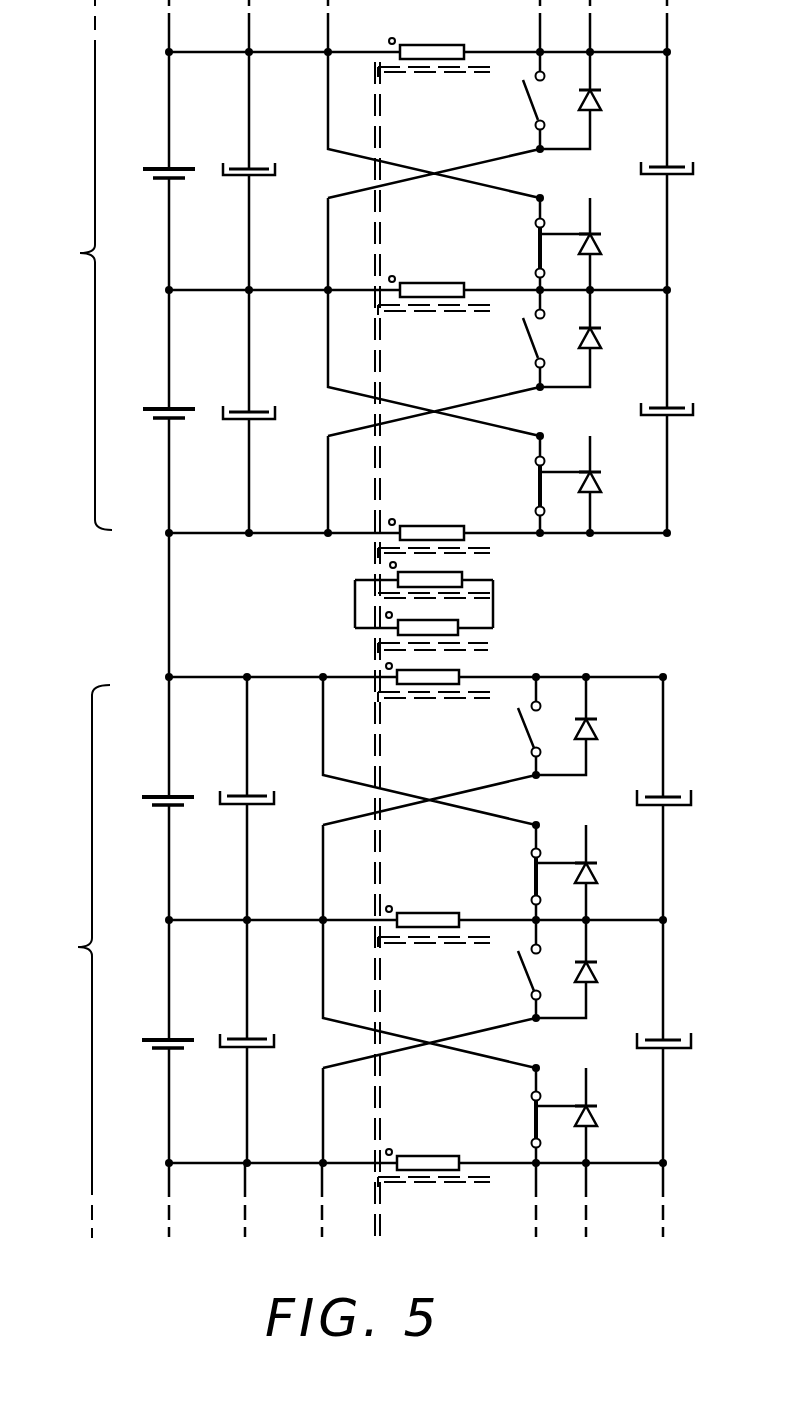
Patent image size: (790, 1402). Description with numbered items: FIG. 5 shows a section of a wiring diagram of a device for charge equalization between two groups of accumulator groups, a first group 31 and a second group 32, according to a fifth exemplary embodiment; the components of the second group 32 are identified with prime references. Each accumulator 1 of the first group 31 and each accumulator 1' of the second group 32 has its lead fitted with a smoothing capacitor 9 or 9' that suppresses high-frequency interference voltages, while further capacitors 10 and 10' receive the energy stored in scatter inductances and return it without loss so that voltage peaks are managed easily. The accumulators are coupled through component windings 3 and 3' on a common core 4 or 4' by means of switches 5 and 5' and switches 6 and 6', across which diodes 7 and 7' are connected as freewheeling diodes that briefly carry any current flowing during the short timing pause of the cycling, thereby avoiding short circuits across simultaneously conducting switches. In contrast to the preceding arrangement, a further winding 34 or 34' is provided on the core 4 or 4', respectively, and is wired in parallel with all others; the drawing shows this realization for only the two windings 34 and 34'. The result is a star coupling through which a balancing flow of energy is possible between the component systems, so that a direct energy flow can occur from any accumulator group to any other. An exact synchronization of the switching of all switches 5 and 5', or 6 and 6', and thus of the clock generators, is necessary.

The accumulator 1 is at (152, 282).
The accumulator 1' is at (152, 920).
The component winding 3 is at (430, 289).
The component winding 3' is at (422, 916).
The core 4 is at (432, 651).
The core 4' is at (434, 939).
The switch 5 is at (513, 211).
The switch 5' is at (513, 847).
The switch 6 is at (519, 365).
The switch 6' is at (510, 993).
The diode 7 is at (593, 282).
The diode 7' is at (591, 920).
The capacitor 9 is at (260, 282).
The capacitor 9' is at (258, 920).
The capacitor 10 is at (699, 282).
The capacitor 10' is at (699, 920).
The first group 31 is at (73, 265).
The second group 32 is at (72, 961).
The further winding 34 is at (453, 588).
The further winding 34' is at (457, 632).